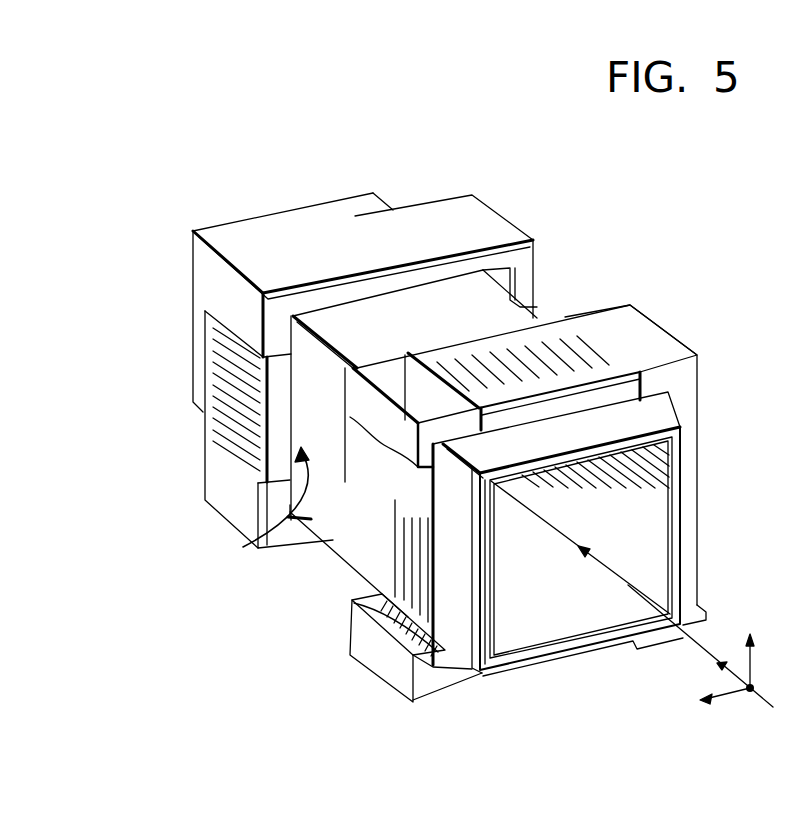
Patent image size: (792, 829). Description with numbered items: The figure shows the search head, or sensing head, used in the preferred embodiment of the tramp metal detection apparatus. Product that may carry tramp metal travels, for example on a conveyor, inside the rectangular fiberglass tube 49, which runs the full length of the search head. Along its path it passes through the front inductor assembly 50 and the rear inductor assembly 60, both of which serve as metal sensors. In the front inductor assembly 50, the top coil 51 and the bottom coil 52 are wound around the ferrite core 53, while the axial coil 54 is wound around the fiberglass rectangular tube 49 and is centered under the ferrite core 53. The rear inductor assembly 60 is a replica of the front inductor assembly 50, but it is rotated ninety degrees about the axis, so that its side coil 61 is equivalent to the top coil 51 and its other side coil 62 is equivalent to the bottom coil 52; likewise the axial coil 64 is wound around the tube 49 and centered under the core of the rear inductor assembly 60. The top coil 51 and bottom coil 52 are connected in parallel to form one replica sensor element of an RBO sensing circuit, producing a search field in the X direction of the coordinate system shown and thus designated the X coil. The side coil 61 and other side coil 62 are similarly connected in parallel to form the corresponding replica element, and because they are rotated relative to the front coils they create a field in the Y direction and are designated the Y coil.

The rectangular fiberglass tube 49 is at (284, 222).
The front inductor assembly 50 is at (542, 496).
The top coil 51 is at (493, 340).
The bottom coil 52 is at (570, 665).
The ferrite core 53 is at (386, 662).
The axial coil 54 is at (414, 497).
The rear inductor assembly 60 is at (500, 182).
The side coil 61 is at (212, 424).
The other side coil 62 is at (538, 308).
The axial coil 64 is at (260, 505).